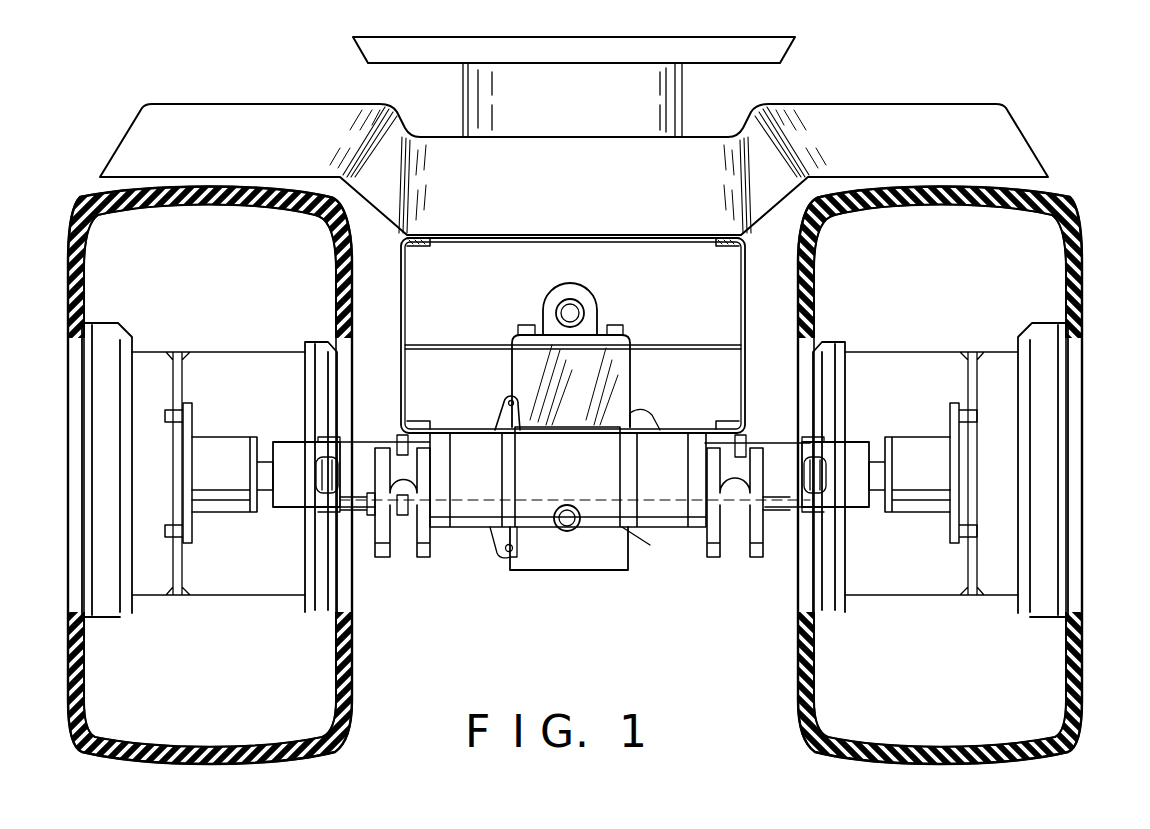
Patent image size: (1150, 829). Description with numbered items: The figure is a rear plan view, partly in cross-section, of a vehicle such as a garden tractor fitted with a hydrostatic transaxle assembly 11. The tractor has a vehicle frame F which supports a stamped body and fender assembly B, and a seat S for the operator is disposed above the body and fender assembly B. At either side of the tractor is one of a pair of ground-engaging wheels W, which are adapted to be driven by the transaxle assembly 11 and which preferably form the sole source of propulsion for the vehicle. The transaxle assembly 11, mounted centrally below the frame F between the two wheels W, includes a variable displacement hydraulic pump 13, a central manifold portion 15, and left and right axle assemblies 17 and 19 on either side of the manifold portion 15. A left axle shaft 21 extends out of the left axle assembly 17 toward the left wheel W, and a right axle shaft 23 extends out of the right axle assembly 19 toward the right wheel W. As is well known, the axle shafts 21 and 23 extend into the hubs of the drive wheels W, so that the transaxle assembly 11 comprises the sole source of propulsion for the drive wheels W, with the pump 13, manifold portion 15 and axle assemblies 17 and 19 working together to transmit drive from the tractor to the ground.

The seat S is at (796, 40).
The body and fender assembly B is at (1030, 146).
The ground-engaging wheels W is at (70, 254).
The vehicle frame F is at (424, 336).
The transaxle assembly 11 is at (466, 573).
The variable displacement hydraulic pump 13 is at (490, 399).
The central manifold portion 15 is at (605, 548).
The left axle assembly 17 is at (364, 425).
The right axle assembly 19 is at (773, 425).
The left axle shaft 21 is at (268, 456).
The right axle shaft 23 is at (875, 455).